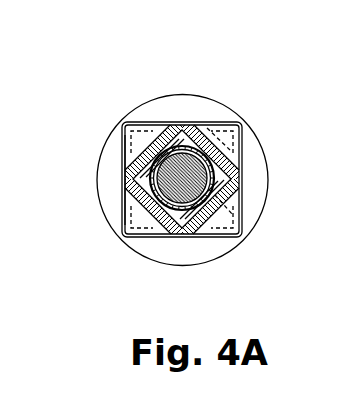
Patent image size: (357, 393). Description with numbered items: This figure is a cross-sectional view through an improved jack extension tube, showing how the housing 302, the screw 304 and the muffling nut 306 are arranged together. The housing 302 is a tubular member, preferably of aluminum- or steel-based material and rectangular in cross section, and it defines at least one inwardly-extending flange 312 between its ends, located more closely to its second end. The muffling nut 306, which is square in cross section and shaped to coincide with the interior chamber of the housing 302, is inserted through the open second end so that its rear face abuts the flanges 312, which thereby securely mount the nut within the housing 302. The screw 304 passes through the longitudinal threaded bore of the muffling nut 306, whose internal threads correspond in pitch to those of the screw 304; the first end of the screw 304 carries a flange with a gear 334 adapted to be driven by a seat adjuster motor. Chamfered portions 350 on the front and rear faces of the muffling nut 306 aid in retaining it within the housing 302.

The housing 302 is at (163, 120).
The screw 304 is at (149, 186).
The muffling nut 306 is at (124, 143).
The inwardly-extending flange 312 is at (150, 148).
The gear 334 is at (218, 103).
The chamfered portions 350 is at (121, 117).